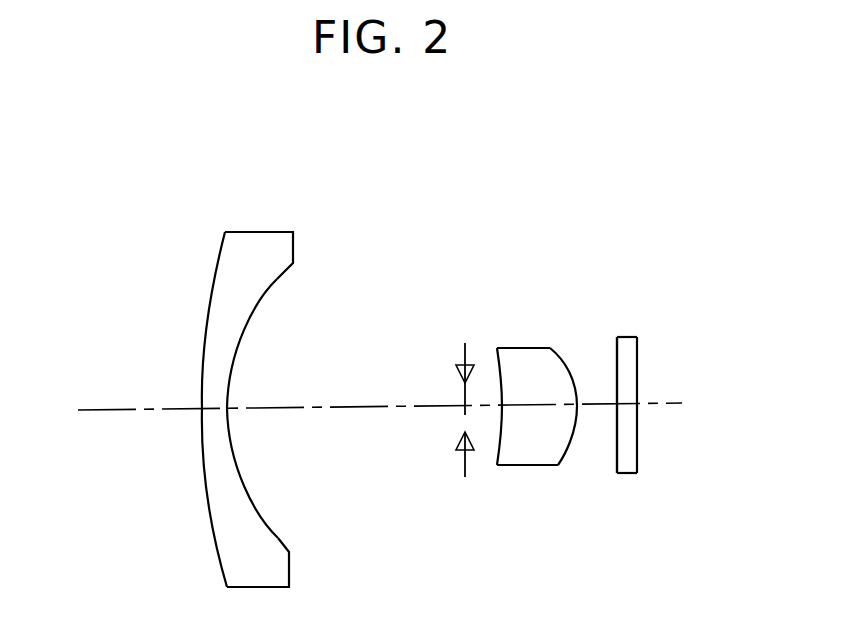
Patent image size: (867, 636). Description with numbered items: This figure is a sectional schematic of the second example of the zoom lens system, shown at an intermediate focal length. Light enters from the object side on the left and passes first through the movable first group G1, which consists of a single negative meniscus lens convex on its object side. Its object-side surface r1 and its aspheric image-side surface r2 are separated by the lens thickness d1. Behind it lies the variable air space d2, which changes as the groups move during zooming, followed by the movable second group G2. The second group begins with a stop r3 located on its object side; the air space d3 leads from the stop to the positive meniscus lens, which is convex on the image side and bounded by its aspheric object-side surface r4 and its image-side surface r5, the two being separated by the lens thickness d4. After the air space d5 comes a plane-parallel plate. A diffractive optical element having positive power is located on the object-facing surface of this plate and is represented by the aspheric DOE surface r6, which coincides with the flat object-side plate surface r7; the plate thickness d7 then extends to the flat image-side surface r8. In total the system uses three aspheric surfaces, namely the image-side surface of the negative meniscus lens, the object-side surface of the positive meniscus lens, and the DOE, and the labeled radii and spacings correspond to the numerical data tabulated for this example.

The first group G1 is at (294, 180).
The second group G2 is at (646, 175).
The object-side surface of negative meniscus lens r1 is at (213, 283).
The image-side surface of negative meniscus lens r2 is at (273, 292).
The stop r3 is at (462, 398).
The object-side surface of positive meniscus lens r4 is at (497, 382).
The image-side surface of positive meniscus lens r5 is at (563, 362).
The DOE surface r6 is at (617, 357).
The object-side plane surface of plane-parallel plate r7 is at (678, 359).
The image-side surface of plane-parallel plate r8 is at (637, 357).
The thickness of negative meniscus lens d1 is at (215, 409).
The variable air space between first group and stop d2 is at (349, 434).
The spacing between stop and positive meniscus lens d3 is at (487, 407).
The thickness of positive meniscus lens d4 is at (534, 430).
The spacing between positive meniscus lens and plane-parallel plate d5 is at (596, 430).
The thickness of plane-parallel plate d7 is at (623, 404).